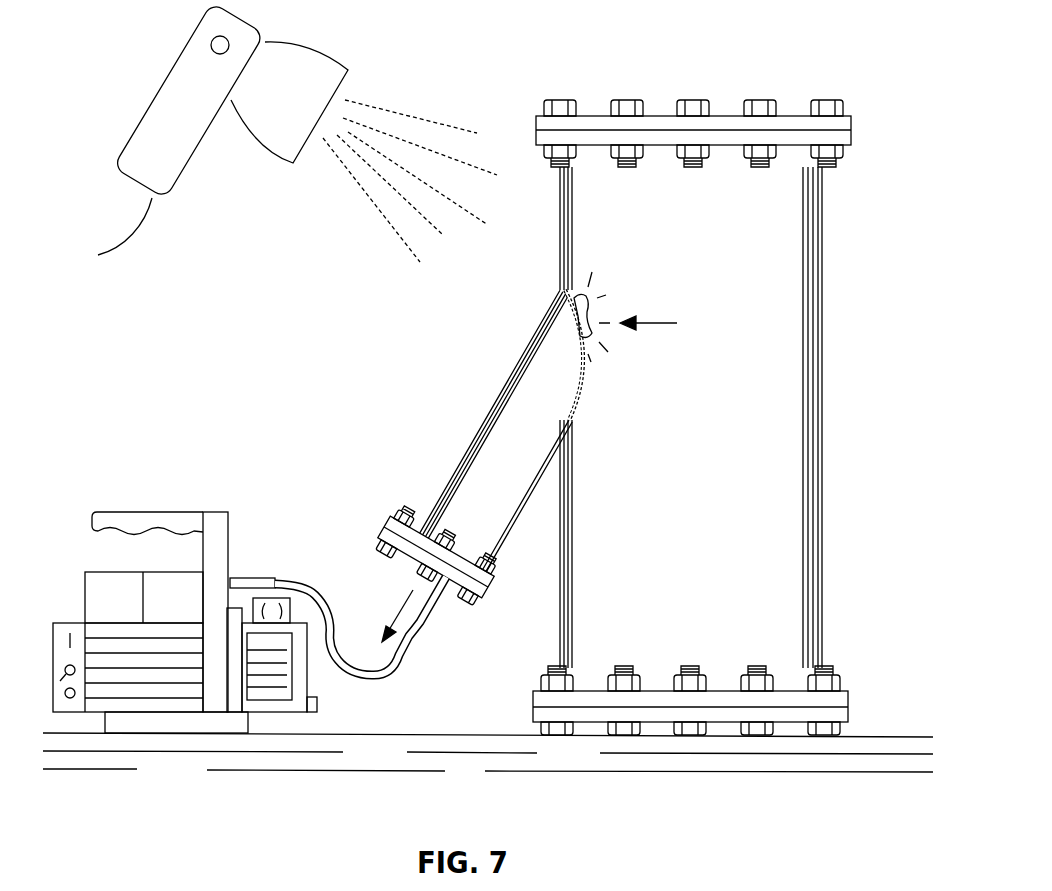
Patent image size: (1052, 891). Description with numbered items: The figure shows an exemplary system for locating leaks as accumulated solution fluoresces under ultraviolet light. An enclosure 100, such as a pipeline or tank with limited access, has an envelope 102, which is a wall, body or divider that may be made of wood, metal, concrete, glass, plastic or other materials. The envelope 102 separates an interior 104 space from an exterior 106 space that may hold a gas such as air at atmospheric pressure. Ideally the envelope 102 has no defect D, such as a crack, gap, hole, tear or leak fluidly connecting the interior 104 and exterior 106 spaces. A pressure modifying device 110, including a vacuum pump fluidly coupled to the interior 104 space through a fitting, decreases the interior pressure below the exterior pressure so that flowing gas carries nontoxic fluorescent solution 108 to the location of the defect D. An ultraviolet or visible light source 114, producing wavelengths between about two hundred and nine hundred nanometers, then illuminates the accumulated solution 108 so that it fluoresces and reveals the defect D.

The enclosure 100 is at (873, 102).
The envelope 102 is at (822, 428).
The interior space 104 is at (710, 559).
The exterior space 106 is at (382, 377).
The nontoxic fluorescent solution 108 is at (590, 321).
The pressure modifying device 110 is at (84, 600).
The ultraviolet or visible light source 114 is at (278, 135).
The defect D is at (658, 324).